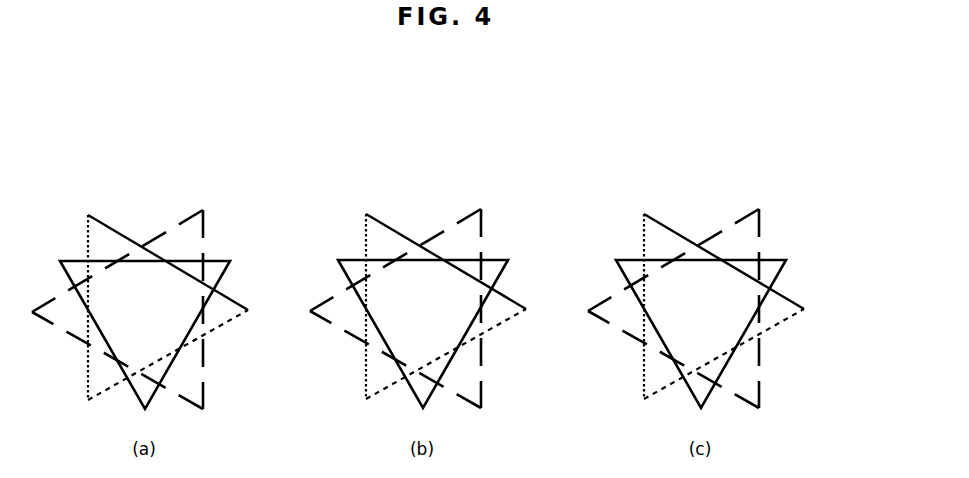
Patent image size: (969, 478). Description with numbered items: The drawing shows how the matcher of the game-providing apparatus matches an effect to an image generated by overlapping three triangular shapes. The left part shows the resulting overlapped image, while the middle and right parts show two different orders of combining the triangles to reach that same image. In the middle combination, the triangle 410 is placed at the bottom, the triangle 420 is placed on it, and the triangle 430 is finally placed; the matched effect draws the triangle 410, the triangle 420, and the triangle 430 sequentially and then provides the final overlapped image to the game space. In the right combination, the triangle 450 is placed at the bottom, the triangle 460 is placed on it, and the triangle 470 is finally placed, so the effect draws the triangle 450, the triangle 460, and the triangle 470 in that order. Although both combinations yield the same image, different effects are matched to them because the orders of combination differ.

The figure 410 is at (366, 215).
The figure 420 is at (481, 209).
The figure 430 is at (508, 260).
The figure 450 is at (786, 260).
The figure 460 is at (759, 209).
The figure 470 is at (644, 215).